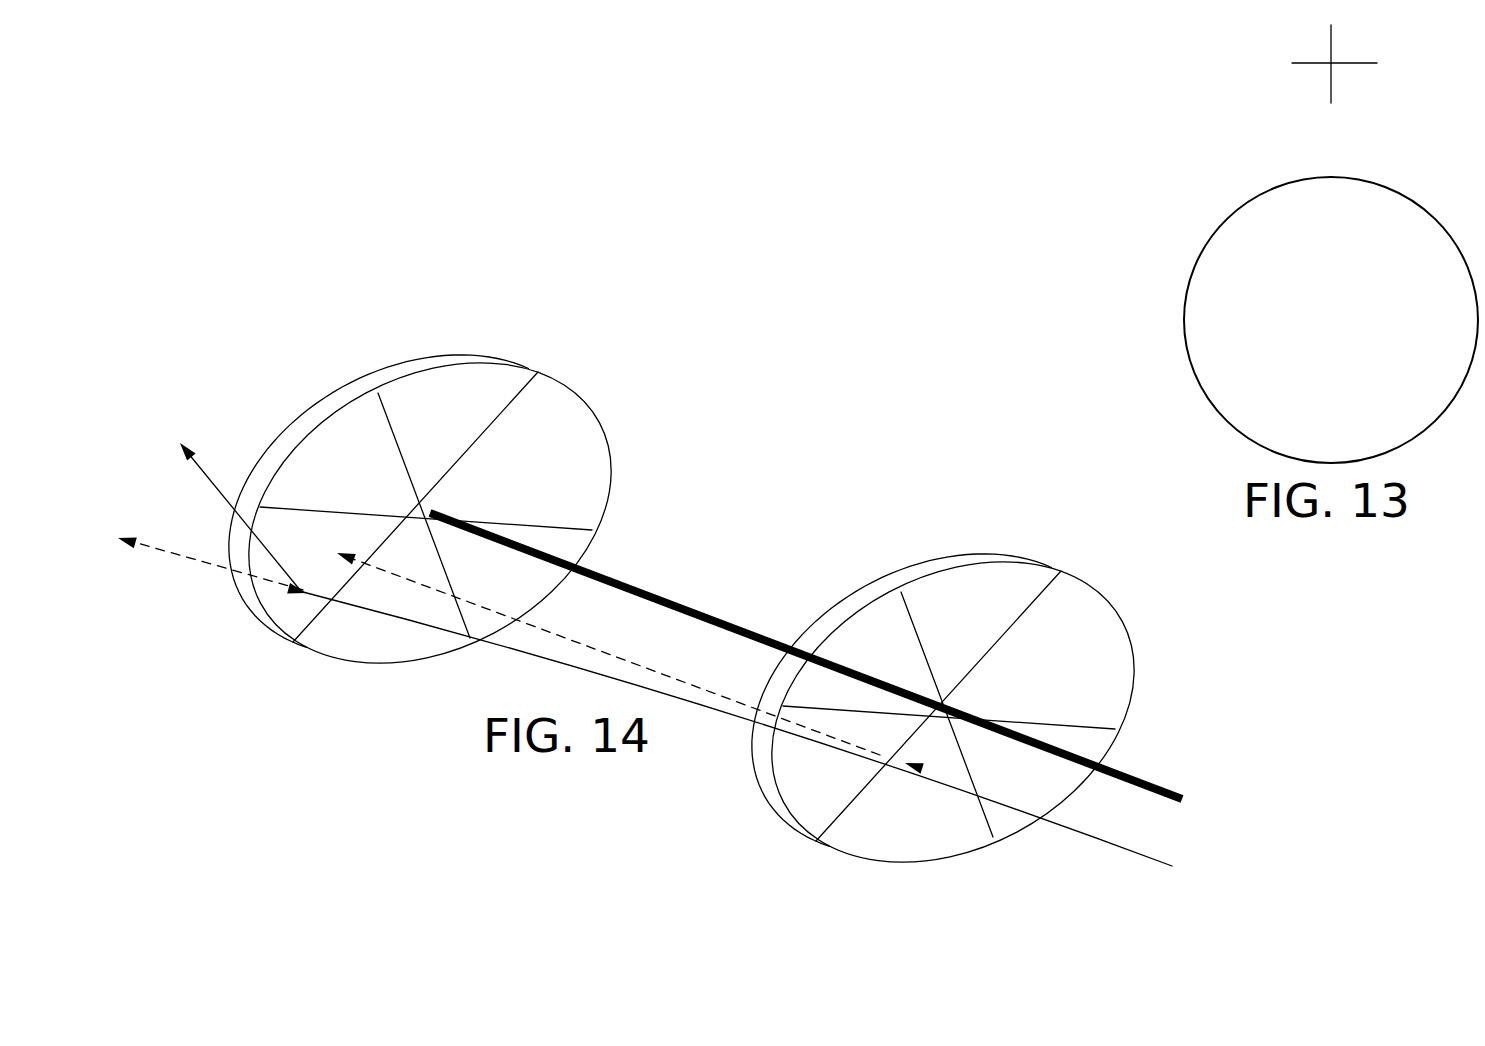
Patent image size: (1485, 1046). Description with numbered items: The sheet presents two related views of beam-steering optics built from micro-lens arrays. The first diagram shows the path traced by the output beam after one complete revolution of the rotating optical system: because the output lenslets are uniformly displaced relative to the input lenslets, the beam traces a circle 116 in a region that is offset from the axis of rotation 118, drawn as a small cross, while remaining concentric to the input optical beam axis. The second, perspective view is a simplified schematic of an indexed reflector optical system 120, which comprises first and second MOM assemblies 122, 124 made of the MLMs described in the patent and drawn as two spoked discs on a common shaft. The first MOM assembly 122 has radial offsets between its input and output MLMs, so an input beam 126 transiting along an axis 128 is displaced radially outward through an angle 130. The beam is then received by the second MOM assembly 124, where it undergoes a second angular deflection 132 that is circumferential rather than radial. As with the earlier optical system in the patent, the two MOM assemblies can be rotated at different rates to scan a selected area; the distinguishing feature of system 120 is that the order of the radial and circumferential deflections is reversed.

In FIG. 13, the circle 116 is at (1265, 267).
In FIG. 13, the axis of rotation 118 is at (1360, 93).
In FIG. 14, the indexed reflector optical system 120 is at (697, 444).
In FIG. 14, the first MOM assembly 122 is at (1068, 582).
In FIG. 14, the second MOM assembly 124 is at (557, 392).
In FIG. 14, the input beam 126 is at (1075, 830).
In FIG. 14, the axis 128 is at (573, 642).
In FIG. 14, the angle 130 is at (542, 658).
In FIG. 14, the second angular deflection 132 is at (182, 560).